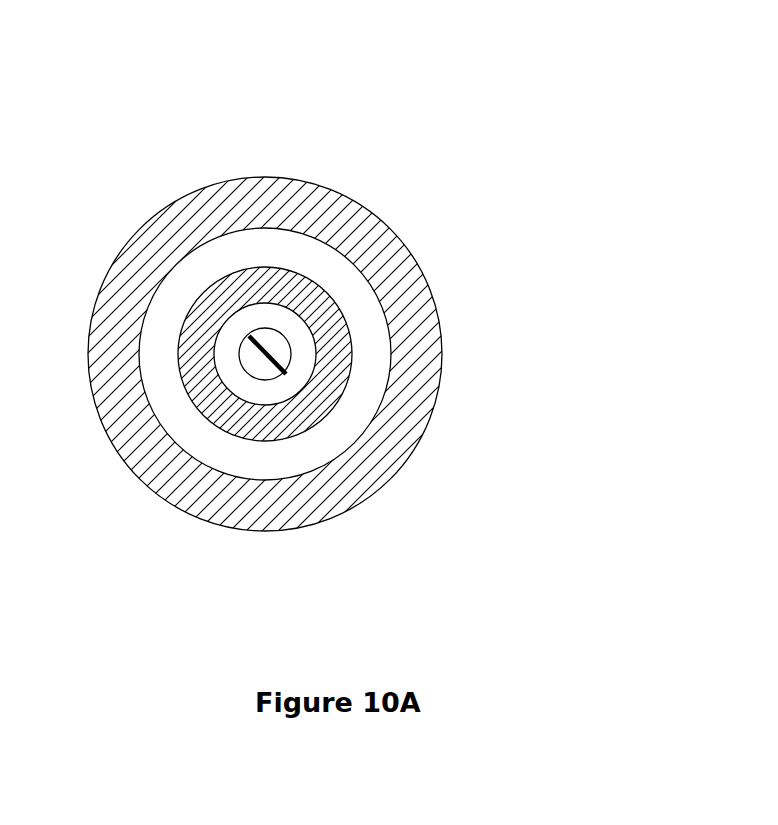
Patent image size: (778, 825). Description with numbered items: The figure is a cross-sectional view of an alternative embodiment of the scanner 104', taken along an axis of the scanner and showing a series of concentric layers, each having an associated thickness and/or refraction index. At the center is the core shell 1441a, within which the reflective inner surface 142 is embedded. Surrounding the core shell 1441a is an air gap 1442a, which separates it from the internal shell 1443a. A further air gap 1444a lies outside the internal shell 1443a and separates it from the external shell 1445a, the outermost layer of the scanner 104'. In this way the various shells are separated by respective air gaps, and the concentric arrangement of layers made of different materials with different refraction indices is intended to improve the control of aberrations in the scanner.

The scanner 104' is at (389, 330).
The reflective inner surface 142 is at (265, 355).
The core shell 1441a is at (275, 342).
The air gap 1442a is at (280, 387).
The internal shell 1443a is at (320, 397).
The air gap 1444a is at (370, 341).
The external shell 1445a is at (390, 232).